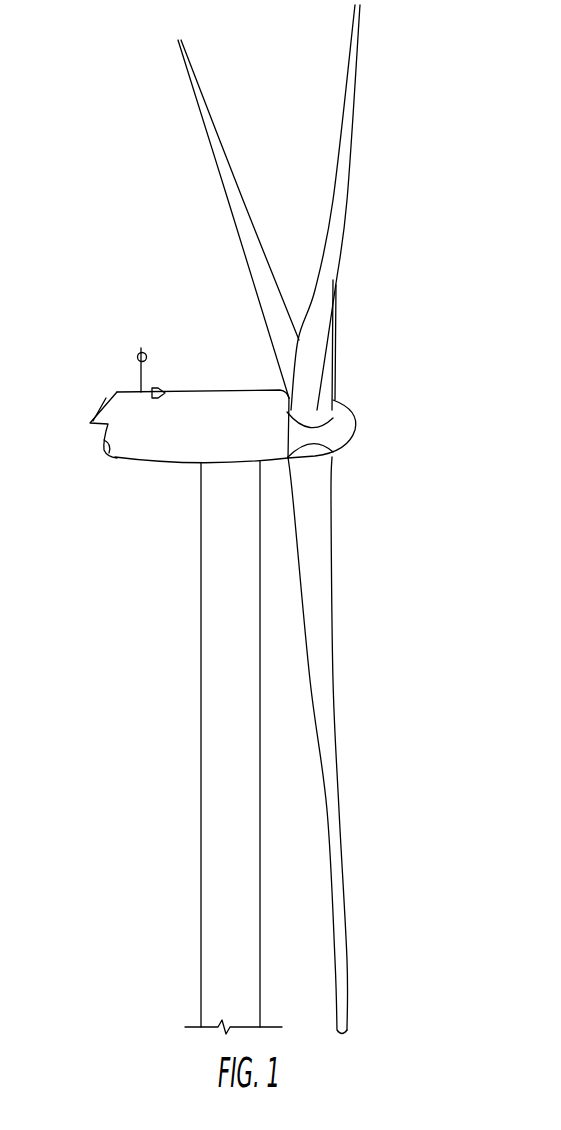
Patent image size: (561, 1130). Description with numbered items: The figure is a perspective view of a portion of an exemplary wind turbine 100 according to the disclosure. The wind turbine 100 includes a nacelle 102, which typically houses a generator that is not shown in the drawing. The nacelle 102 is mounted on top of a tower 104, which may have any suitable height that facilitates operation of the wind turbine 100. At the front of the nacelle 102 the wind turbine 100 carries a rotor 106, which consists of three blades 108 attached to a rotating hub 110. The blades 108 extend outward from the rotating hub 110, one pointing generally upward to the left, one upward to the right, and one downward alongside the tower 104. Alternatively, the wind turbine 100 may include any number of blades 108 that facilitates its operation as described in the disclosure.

The wind turbine 100 is at (100, 111).
The nacelle 102 is at (134, 470).
The tower 104 is at (201, 702).
The rotor 106 is at (460, 196).
The blades 108 is at (210, 112).
The rotating hub 110 is at (355, 430).